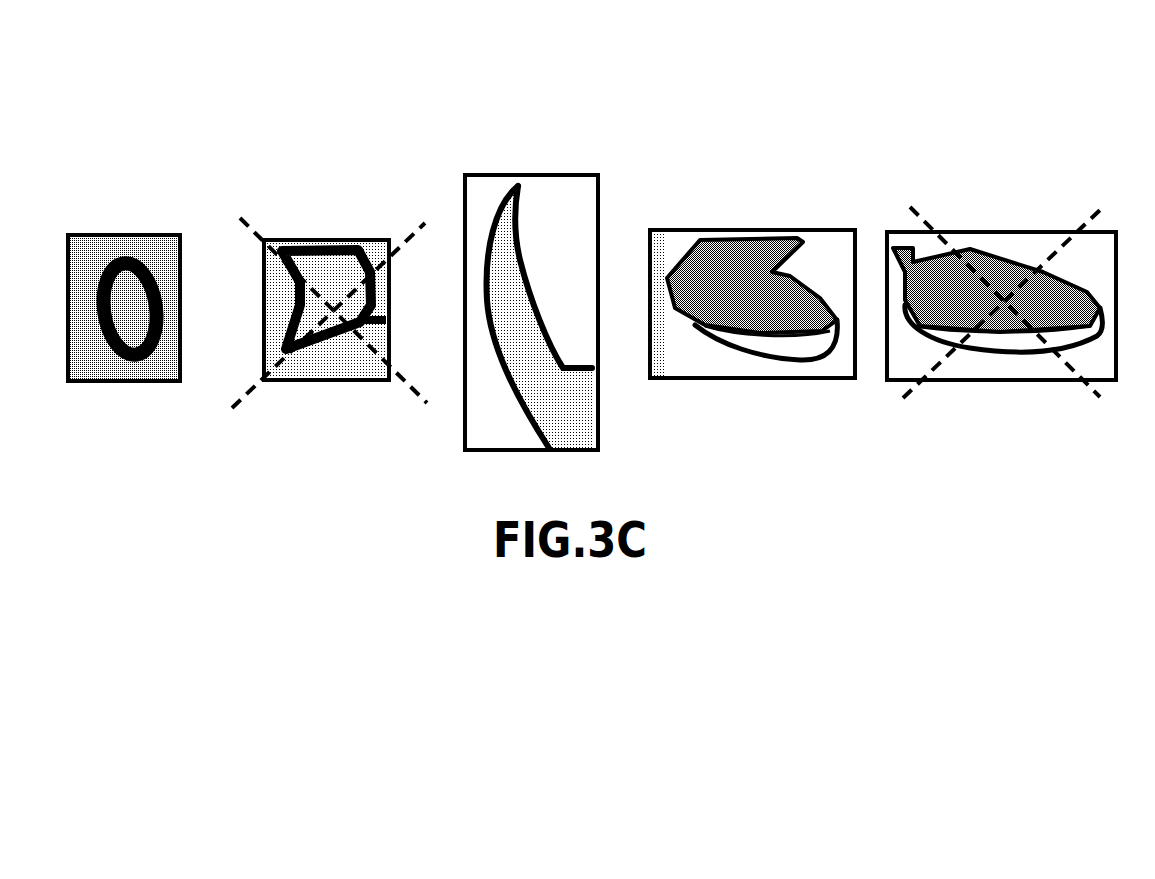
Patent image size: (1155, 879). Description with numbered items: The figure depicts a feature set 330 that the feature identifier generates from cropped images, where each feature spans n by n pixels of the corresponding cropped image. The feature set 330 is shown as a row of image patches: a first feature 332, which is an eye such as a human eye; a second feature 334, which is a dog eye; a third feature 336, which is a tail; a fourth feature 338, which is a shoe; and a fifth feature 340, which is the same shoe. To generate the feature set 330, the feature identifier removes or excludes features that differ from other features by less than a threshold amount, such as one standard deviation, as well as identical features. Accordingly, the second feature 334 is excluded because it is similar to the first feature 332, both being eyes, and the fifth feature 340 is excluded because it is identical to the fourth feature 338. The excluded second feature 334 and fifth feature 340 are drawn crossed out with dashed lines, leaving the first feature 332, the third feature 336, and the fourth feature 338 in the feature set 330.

The feature set 330 is at (936, 104).
The first feature 332 is at (127, 232).
The second feature 334 is at (327, 237).
The third feature 336 is at (530, 173).
The fourth feature 338 is at (755, 225).
The fifth feature 340 is at (1013, 230).